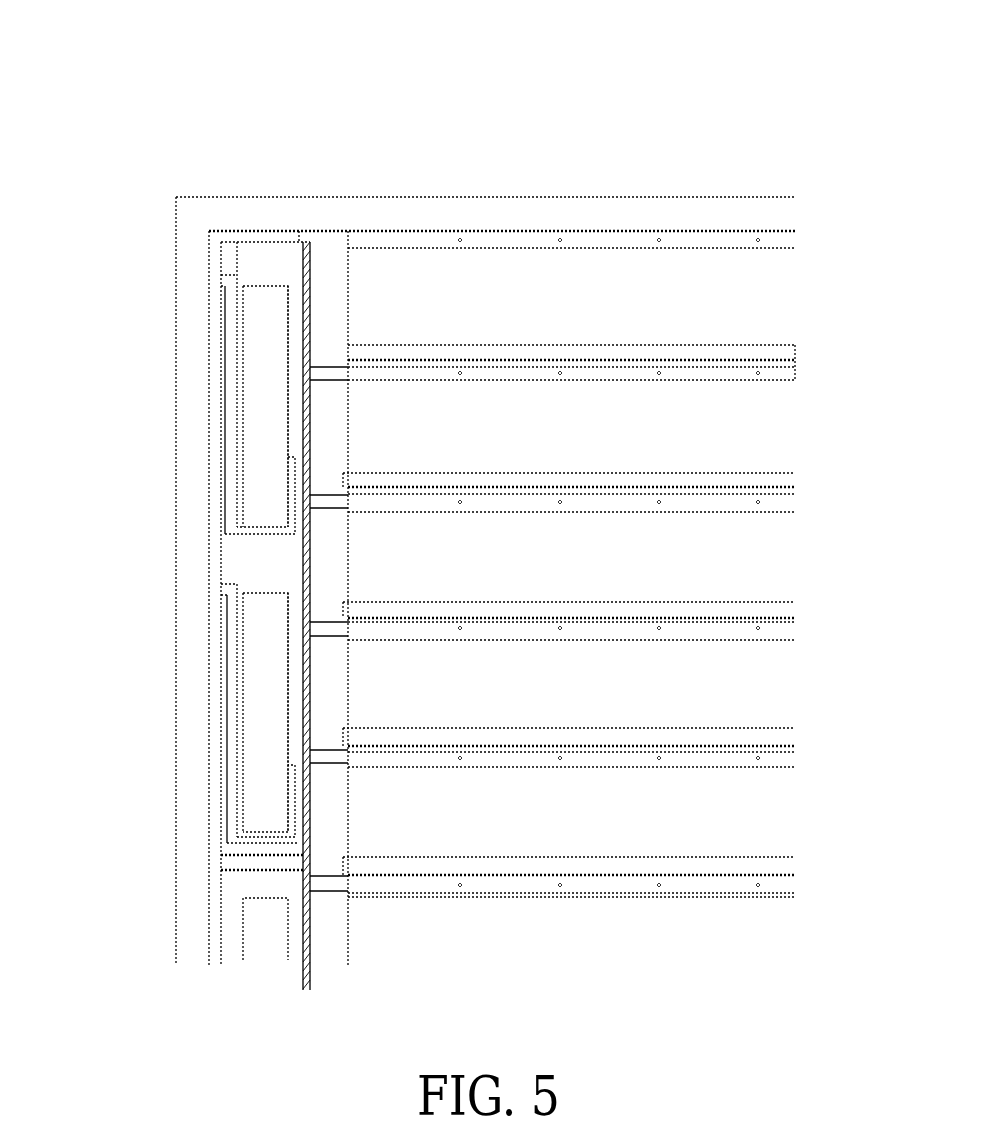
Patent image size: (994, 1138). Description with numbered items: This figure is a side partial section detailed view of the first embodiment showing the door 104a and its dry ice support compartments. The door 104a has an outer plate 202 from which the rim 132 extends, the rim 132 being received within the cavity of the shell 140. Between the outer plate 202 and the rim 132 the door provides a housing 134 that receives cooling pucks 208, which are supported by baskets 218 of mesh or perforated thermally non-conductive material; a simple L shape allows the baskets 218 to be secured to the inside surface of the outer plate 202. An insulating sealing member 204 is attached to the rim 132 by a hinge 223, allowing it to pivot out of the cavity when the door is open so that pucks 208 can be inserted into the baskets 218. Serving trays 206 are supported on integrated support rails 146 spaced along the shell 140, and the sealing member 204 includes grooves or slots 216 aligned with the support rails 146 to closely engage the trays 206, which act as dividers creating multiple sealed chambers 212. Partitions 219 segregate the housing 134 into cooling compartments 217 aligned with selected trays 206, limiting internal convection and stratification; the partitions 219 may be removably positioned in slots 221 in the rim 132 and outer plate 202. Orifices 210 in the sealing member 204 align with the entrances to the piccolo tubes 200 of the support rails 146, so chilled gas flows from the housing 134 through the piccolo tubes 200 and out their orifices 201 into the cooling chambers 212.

The first door 104a is at (176, 660).
The rim 132 is at (277, 213).
The housing 134 is at (267, 263).
The shell 140 is at (645, 197).
The integrated support rails 146 is at (805, 362).
The piccolo tubes 200 is at (705, 368).
The orifices 201 is at (558, 368).
The outer plate 202 is at (192, 222).
The insulated sealing member 204 is at (330, 287).
The serving trays 206 is at (626, 345).
The cooling pucks 208 is at (262, 410).
The orifices 210 is at (325, 370).
The sealed chambers 212 is at (528, 322).
The grooves or slots 216 is at (343, 347).
The cooling compartments 217 is at (255, 560).
The baskets 218 is at (233, 418).
The partitions 219 is at (255, 860).
The slots 221 is at (262, 876).
The hinge 223 is at (307, 240).